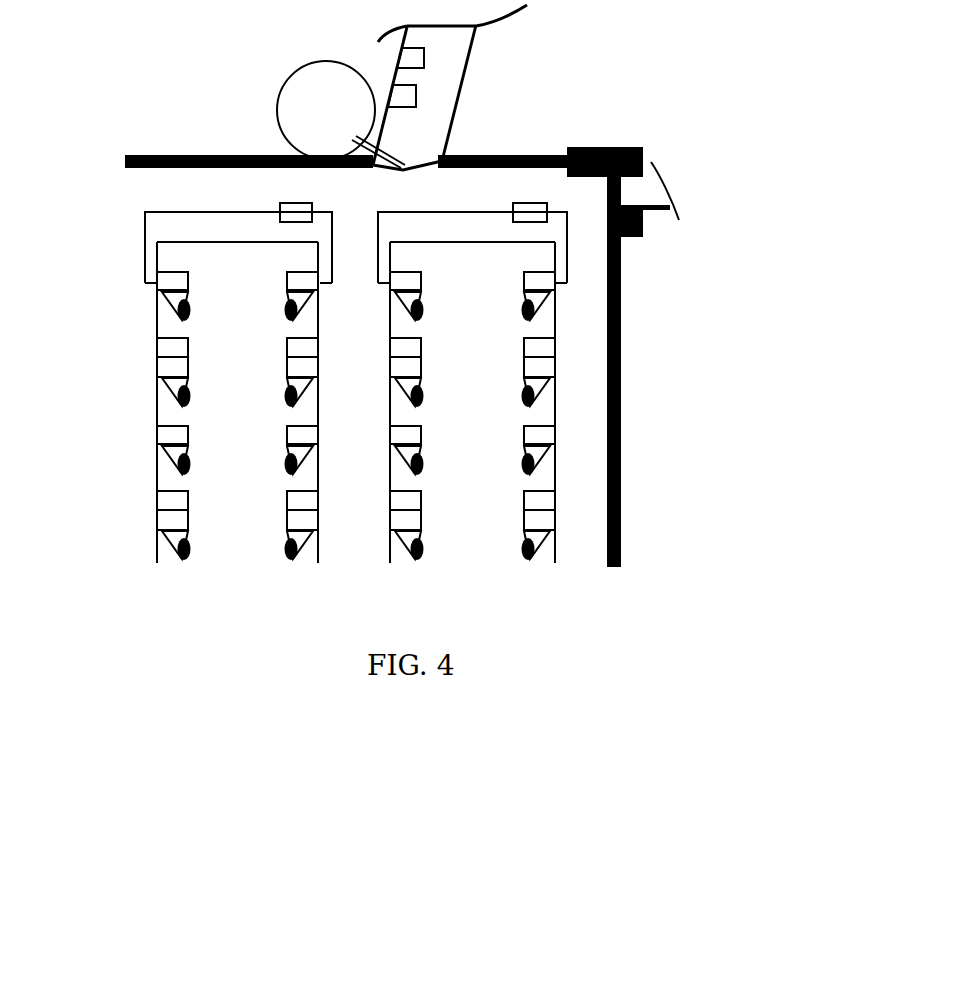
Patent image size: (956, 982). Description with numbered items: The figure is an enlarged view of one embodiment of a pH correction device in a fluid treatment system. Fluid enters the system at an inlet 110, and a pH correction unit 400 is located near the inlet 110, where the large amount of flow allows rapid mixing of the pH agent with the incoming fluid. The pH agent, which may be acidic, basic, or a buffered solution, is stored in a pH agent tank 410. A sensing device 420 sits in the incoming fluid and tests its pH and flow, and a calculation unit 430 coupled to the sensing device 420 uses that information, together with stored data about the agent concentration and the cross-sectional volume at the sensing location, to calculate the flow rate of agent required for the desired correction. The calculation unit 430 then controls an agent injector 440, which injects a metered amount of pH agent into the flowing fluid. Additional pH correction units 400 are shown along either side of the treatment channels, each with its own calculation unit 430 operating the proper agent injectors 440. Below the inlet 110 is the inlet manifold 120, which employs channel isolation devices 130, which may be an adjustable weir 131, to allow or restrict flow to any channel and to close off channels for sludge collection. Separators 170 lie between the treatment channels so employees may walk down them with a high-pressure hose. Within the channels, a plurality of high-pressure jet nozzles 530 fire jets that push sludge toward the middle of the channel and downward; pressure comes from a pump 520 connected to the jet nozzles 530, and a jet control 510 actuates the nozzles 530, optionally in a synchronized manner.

The inlet 110 is at (455, 42).
The inlet manifold 120 is at (185, 185).
The channel isolation device 130 is at (180, 258).
The adjustable weir 131 is at (311, 274).
The separator 170 is at (580, 400).
The pH correction unit 400 is at (148, 364).
The pH agent tank 410 is at (310, 98).
The sensing device 420 is at (424, 62).
The calculation unit 430 is at (416, 100).
The agent injector 440 is at (447, 147).
The jet control 510 is at (298, 282).
The pump 520 is at (293, 208).
The high-pressure jet nozzle 530 is at (285, 307).